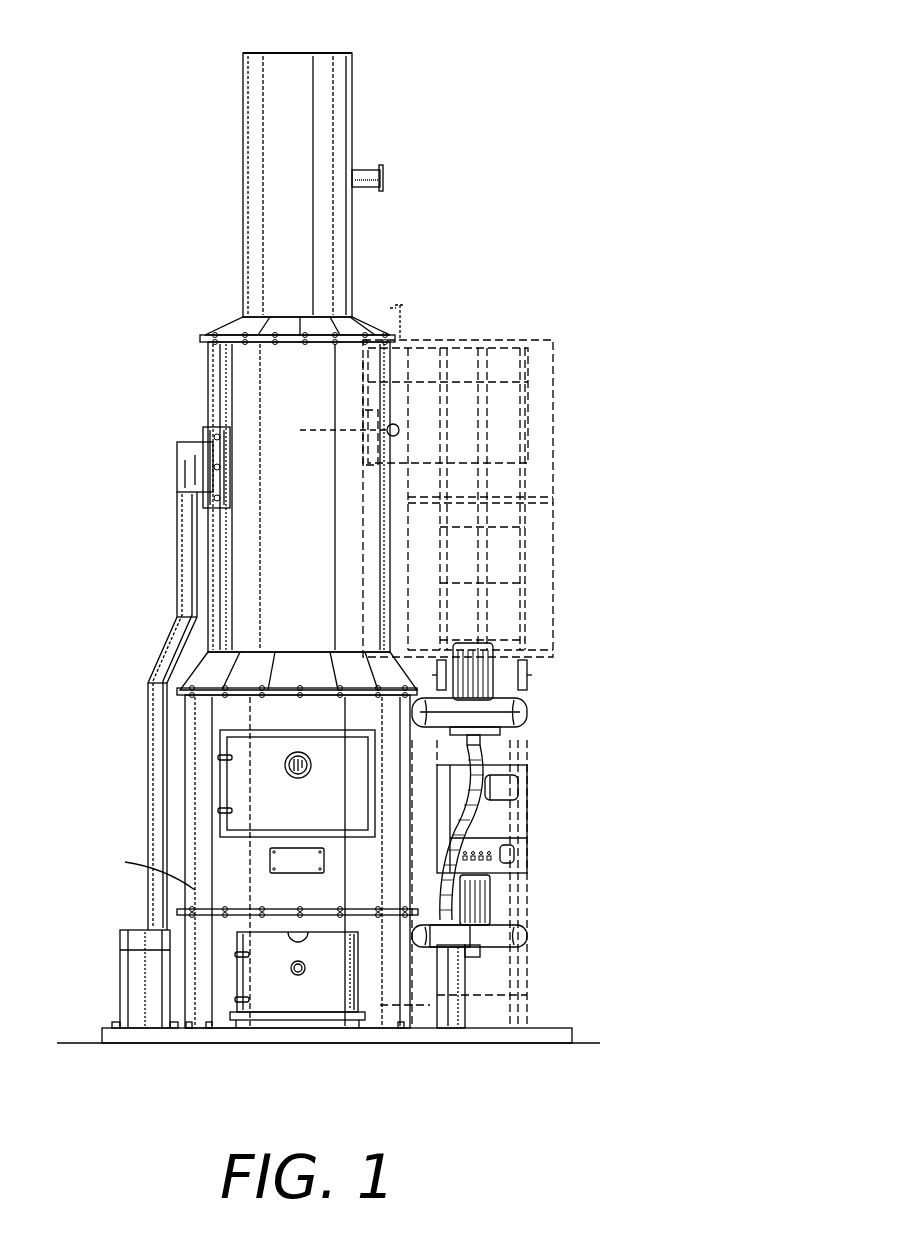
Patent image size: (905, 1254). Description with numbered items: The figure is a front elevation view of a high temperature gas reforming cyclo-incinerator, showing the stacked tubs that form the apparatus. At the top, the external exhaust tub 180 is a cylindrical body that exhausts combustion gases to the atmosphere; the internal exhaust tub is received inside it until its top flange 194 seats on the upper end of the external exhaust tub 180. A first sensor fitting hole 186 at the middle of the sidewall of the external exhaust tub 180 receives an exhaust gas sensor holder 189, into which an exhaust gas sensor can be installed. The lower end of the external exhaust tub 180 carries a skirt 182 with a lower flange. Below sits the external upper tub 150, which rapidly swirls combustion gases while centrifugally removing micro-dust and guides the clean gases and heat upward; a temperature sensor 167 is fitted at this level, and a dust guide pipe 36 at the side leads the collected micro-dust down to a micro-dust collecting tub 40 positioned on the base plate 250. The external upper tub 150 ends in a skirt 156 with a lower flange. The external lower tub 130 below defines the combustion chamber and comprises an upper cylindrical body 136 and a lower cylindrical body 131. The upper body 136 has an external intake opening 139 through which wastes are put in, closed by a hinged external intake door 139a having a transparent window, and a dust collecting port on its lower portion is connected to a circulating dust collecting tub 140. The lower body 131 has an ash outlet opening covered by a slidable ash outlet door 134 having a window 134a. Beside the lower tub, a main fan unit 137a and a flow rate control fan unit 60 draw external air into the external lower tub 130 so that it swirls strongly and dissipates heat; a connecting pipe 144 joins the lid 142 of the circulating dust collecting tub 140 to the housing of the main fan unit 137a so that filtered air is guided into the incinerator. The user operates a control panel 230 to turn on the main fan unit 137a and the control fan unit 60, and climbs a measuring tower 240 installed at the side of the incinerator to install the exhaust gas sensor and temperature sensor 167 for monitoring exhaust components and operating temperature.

The top flange 194 is at (335, 53).
The external exhaust tub 180 is at (345, 105).
The exhaust gas sensor holder 189 is at (368, 168).
The first sensor fitting hole 186 is at (355, 185).
The skirt 182 is at (355, 325).
The measuring tower 240 is at (555, 393).
The dust guide pipe 36 is at (180, 455).
The temperature sensor 167 is at (398, 431).
The external upper tub 150 is at (215, 553).
The skirt 156 is at (205, 668).
The main fan unit 137a is at (527, 700).
The external lower tub 130 is at (185, 745).
The external intake door 139a is at (285, 762).
The external intake opening 139 is at (335, 833).
The circulating dust collecting tub 140 is at (235, 790).
The control panel 230 is at (530, 775).
The connecting pipe 144 is at (467, 830).
The upper cylindrical body 136 is at (310, 935).
The lid 142 is at (470, 930).
The flow rate control fan unit 60 is at (527, 950).
The lower cylindrical body 131 is at (165, 985).
The micro-dust collecting tub 40 is at (140, 1010).
The base plate 250 is at (540, 1035).
The window 134a is at (298, 976).
The slidable ash outlet door 134 is at (330, 995).